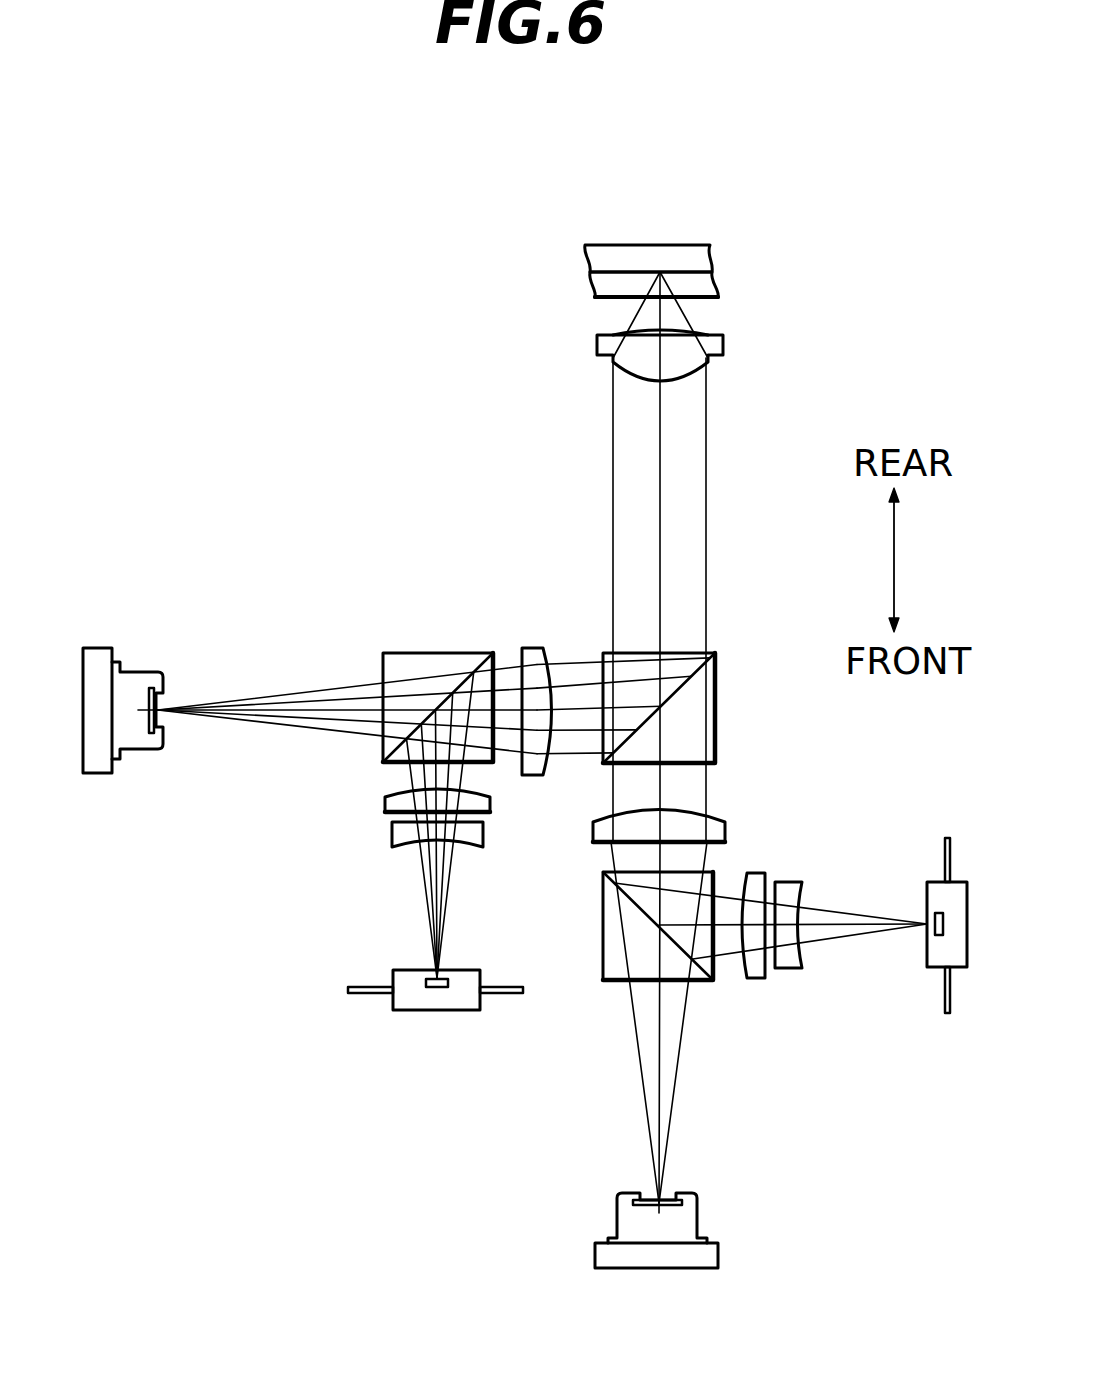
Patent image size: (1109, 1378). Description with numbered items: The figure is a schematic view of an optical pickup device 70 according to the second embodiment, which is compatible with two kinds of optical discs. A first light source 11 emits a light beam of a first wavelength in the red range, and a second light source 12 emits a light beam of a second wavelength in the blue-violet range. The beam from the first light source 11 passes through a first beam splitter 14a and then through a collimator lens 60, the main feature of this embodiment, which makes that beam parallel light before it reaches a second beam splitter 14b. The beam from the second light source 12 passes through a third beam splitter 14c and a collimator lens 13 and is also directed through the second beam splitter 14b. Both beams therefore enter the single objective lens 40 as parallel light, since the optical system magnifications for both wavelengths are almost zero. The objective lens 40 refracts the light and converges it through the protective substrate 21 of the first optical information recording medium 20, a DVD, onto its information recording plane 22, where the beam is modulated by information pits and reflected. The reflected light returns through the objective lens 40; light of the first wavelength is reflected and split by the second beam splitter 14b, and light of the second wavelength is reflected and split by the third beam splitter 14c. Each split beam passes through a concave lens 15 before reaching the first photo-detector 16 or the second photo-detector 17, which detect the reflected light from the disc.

The first light source 11 is at (128, 668).
The second light source 12 is at (688, 1227).
The collimator lens 13 is at (727, 830).
The first beam splitter 14a is at (432, 652).
The second beam splitter 14b is at (718, 707).
The third beam splitter 14c is at (603, 918).
The concave lens 15 is at (392, 830).
The first photo-detector 16 is at (440, 1013).
The second photo-detector 17 is at (927, 948).
The first optical information recording medium 20 is at (627, 260).
The protective substrate 21 is at (707, 287).
The information recording plane 22 is at (612, 298).
The objective lens 40 is at (723, 347).
The collimator lens 60 is at (530, 645).
The optical pickup device 70 is at (859, 309).